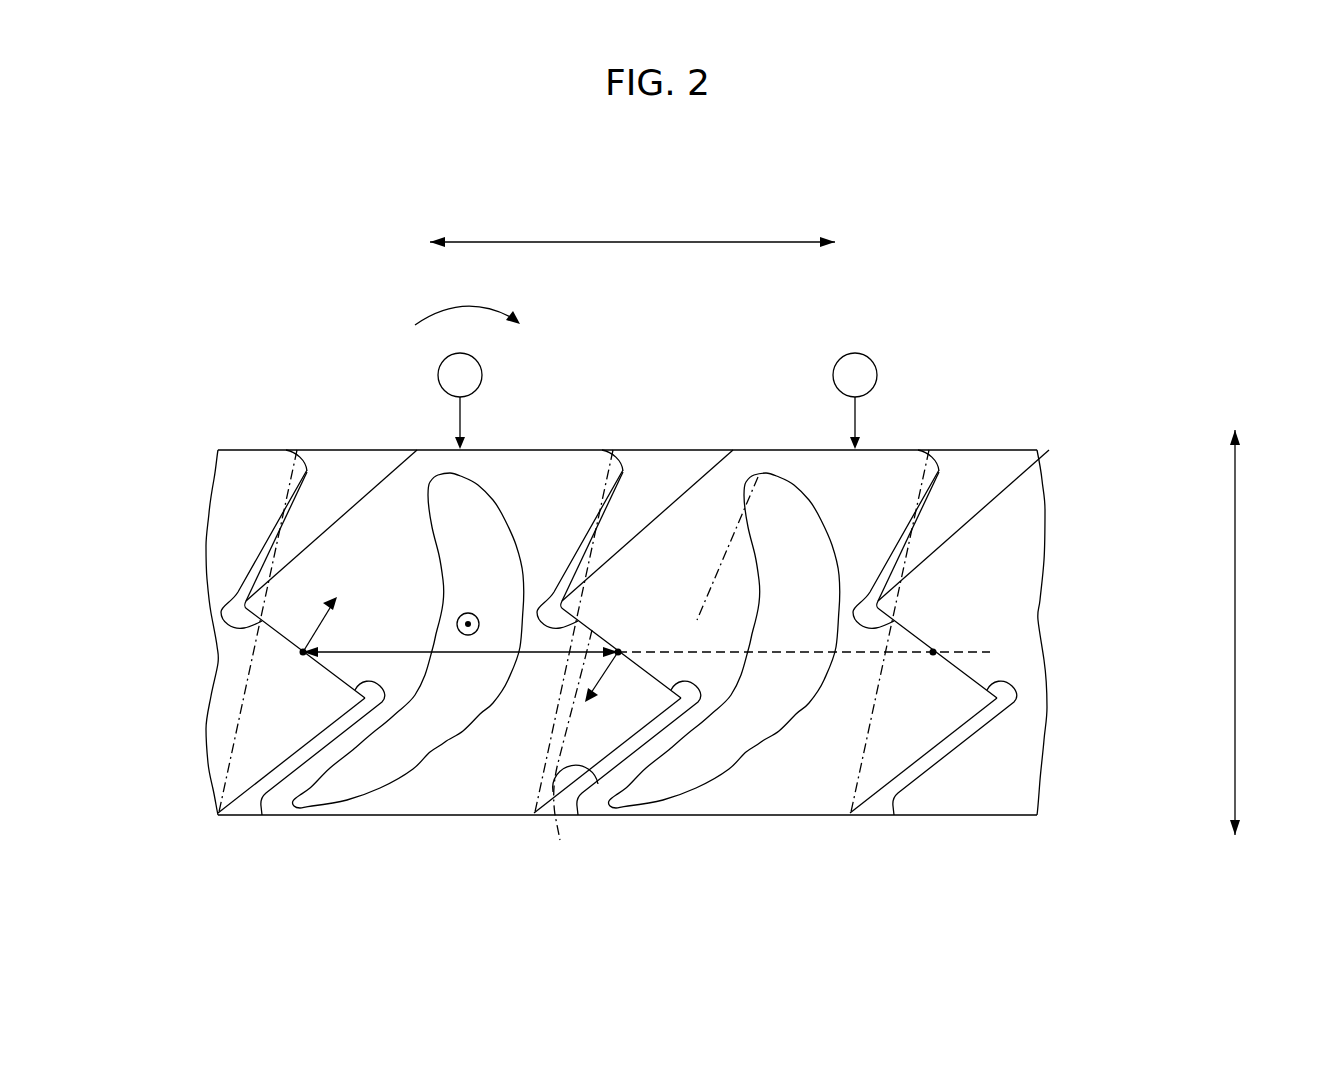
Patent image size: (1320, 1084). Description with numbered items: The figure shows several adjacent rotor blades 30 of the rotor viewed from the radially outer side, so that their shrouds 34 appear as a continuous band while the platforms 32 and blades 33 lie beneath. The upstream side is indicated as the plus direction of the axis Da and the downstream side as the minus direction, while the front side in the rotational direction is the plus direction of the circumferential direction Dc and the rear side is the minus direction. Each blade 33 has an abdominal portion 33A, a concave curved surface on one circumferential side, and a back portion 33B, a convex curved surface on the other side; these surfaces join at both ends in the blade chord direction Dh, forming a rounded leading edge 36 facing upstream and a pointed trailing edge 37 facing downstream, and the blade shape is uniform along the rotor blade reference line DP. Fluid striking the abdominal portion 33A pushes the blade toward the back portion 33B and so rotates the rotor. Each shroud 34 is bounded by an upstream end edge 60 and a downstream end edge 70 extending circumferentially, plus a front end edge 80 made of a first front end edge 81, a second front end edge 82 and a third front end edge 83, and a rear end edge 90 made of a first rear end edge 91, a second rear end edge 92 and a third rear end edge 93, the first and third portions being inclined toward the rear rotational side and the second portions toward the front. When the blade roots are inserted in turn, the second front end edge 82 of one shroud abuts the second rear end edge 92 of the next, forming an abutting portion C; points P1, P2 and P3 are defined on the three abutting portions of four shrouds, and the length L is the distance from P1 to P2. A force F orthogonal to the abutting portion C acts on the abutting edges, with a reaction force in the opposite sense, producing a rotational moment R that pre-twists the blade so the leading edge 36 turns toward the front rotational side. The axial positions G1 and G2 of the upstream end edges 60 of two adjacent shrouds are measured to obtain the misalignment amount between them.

The rotor blade 30 is at (243, 440).
The platform 32 is at (258, 772).
The blade 33 is at (724, 565).
The abdominal portion 33A is at (431, 583).
The back portion 33B is at (496, 500).
The shroud 34 is at (236, 496).
The leading edge 36 is at (749, 477).
The trailing edge 37 is at (598, 785).
The upstream end edge 60 is at (582, 450).
The downstream end edge 70 is at (312, 815).
The front end edge 80 is at (1016, 631).
The first front end edge 81 is at (932, 540).
The second front end edge 82 is at (916, 630).
The third front end edge 83 is at (953, 733).
The rear end edge 90 is at (475, 616).
The first rear end edge 91 is at (663, 503).
The second rear end edge 92 is at (575, 660).
The third rear end edge 93 is at (557, 835).
The abutting portion C is at (256, 650).
The blade chord direction Dh is at (725, 557).
The rotational direction Dc is at (632, 227).
The axial (upstream-downstream) direction Da is at (1253, 633).
The rotor blade reference line DP is at (467, 606).
The force F is at (460, 657).
The length from P1 to P2 L is at (646, 638).
The point on abutting portion P1 is at (300, 655).
The point on abutting portion P2 is at (622, 651).
The point on abutting portion P3 is at (933, 655).
The rotational moment R is at (467, 294).
The position of upstream end edge G1 is at (460, 401).
The position of upstream end edge G2 is at (855, 401).